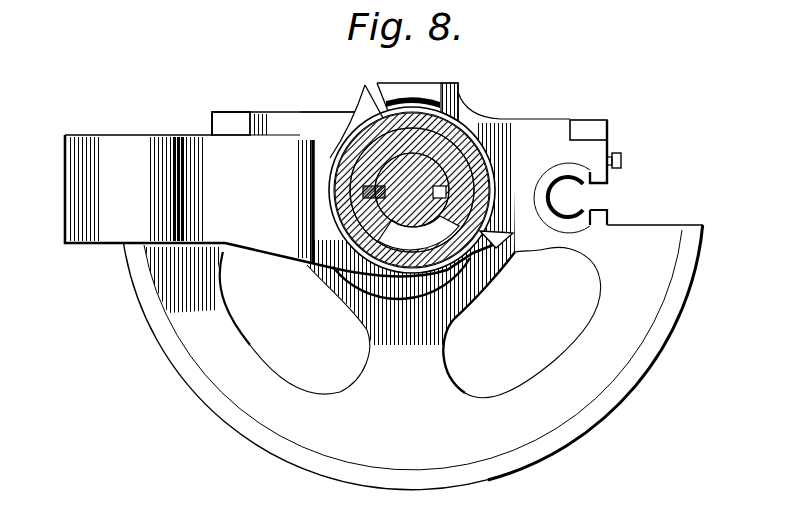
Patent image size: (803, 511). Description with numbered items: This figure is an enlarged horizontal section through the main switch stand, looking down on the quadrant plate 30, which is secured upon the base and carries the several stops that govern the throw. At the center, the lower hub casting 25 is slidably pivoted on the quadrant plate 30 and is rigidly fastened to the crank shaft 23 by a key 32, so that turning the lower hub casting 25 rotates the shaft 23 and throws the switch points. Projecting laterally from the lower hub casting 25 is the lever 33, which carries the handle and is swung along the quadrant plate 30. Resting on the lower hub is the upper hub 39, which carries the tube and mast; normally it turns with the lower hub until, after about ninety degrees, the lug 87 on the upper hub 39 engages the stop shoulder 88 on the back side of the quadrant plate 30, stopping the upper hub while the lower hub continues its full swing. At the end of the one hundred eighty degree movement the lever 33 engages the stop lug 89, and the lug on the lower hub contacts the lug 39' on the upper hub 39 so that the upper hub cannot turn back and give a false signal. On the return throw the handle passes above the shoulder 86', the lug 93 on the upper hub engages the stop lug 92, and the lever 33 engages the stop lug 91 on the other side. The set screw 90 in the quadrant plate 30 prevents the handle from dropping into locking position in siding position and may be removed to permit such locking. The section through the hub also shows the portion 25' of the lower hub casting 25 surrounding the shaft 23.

The lever 33 is at (207, 150).
The stop lug 91 is at (242, 124).
The stop lug 92 is at (378, 95).
The lug 93 is at (372, 109).
The stop shoulder 88 is at (455, 88).
The upper hub 39 is at (430, 194).
The lug 39' is at (458, 183).
The stop lug 89 is at (590, 125).
The set screw 90 is at (635, 159).
The shoulder 86' is at (670, 212).
The key 32 is at (362, 190).
The hub sleeve 25' is at (361, 190).
The shaft 23 is at (416, 217).
The lower hub casting 25 is at (473, 282).
The lug 87 is at (494, 237).
The quadrant plate 30 is at (413, 357).